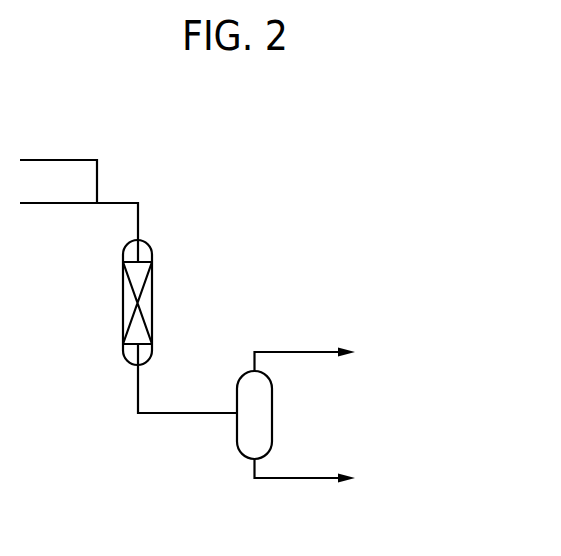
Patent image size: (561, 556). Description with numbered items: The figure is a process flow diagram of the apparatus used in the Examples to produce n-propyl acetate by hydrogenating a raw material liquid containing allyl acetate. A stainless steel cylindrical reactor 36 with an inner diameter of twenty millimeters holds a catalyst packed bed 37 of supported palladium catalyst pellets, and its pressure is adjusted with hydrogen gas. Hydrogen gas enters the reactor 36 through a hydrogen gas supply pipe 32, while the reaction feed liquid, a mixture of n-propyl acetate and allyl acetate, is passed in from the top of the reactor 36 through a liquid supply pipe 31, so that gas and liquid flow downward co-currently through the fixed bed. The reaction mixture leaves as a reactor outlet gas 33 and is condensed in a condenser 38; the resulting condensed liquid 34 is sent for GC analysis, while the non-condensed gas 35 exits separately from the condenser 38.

The liquid supply pipe 31 is at (55, 205).
The hydrogen gas supply pipe 32 is at (44, 160).
The reactor outlet gas 33 is at (185, 414).
The condensed liquid 34 is at (272, 480).
The non-condensed gas 35 is at (283, 352).
The reactor 36 is at (153, 247).
The catalyst packed bed 37 is at (148, 306).
The condenser 38 is at (273, 412).